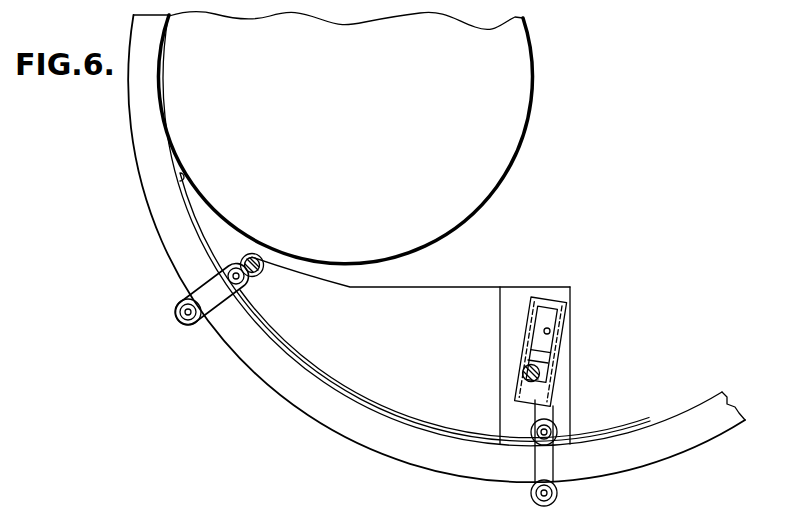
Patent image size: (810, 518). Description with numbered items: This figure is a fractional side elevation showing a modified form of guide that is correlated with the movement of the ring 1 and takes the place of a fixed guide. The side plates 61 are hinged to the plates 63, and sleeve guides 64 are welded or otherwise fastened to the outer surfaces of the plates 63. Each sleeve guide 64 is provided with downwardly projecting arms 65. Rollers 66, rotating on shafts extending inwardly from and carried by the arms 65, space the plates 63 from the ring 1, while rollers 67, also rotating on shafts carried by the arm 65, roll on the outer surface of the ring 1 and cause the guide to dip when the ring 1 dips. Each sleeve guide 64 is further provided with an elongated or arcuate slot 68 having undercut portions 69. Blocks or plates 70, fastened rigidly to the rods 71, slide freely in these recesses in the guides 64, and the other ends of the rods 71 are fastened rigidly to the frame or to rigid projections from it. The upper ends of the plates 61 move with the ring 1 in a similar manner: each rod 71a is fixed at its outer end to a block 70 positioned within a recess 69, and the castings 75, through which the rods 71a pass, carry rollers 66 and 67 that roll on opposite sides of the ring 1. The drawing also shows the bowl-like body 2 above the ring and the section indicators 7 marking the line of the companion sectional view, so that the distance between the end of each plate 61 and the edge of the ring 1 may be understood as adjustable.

The ring 1 is at (152, 192).
The bowl 2 is at (528, 117).
The section line 7- 7 is at (118, 45).
The side plate 61 is at (428, 294).
The plate 63 is at (545, 292).
The sleeve guide 64 is at (530, 301).
The downwardly projecting arm 65 is at (551, 458).
The roller 66 is at (557, 431).
The roller 67 is at (553, 502).
The elongated or arcuate slot 68 is at (551, 332).
The undercut portion 69 is at (523, 330).
The block 70 is at (537, 360).
The rod 71 is at (540, 378).
The rod 71a is at (263, 269).
The casting 75 is at (215, 296).